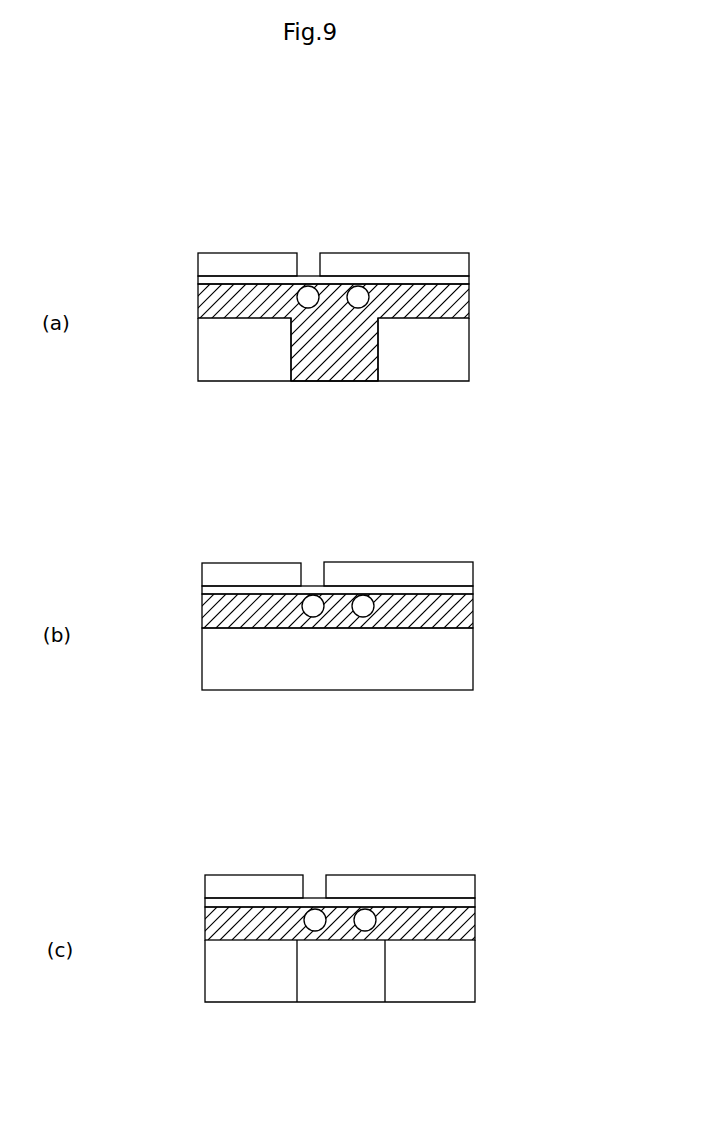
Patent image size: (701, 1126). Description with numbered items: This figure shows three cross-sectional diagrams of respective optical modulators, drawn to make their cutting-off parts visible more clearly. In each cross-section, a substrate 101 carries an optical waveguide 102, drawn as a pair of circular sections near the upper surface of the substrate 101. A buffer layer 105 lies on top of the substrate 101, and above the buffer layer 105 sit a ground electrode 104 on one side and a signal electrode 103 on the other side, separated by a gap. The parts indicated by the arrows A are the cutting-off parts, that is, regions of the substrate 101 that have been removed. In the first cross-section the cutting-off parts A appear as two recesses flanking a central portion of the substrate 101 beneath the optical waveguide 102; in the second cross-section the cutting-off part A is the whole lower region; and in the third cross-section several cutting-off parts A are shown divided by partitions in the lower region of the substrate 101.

The substrate 101 is at (238, 302).
The optical waveguide 102 is at (308, 300).
The signal electrode 103 is at (393, 265).
The ground electrode 104 is at (247, 265).
The buffer layer 105 is at (470, 278).
The cutting-off part A is at (233, 355).